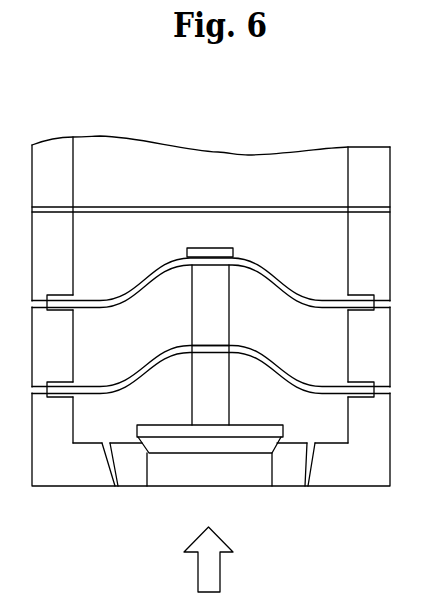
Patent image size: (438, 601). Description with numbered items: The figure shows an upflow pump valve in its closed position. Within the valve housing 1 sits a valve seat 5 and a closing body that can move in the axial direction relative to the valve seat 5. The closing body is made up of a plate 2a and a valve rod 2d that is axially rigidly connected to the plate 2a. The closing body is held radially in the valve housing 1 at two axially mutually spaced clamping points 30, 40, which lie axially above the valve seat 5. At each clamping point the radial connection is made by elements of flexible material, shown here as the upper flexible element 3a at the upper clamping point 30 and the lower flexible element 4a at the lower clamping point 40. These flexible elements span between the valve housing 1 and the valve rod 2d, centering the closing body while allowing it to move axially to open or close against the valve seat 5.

The valve housing 1 is at (78, 467).
The valve seat 5 is at (125, 458).
The clamping point 40 is at (210, 347).
The plate 2a is at (257, 443).
The element consisting of flexible material 4a is at (325, 388).
The valve rod 2d is at (208, 310).
The element consisting of flexible material 3a is at (268, 273).
The clamping point 30 is at (207, 263).